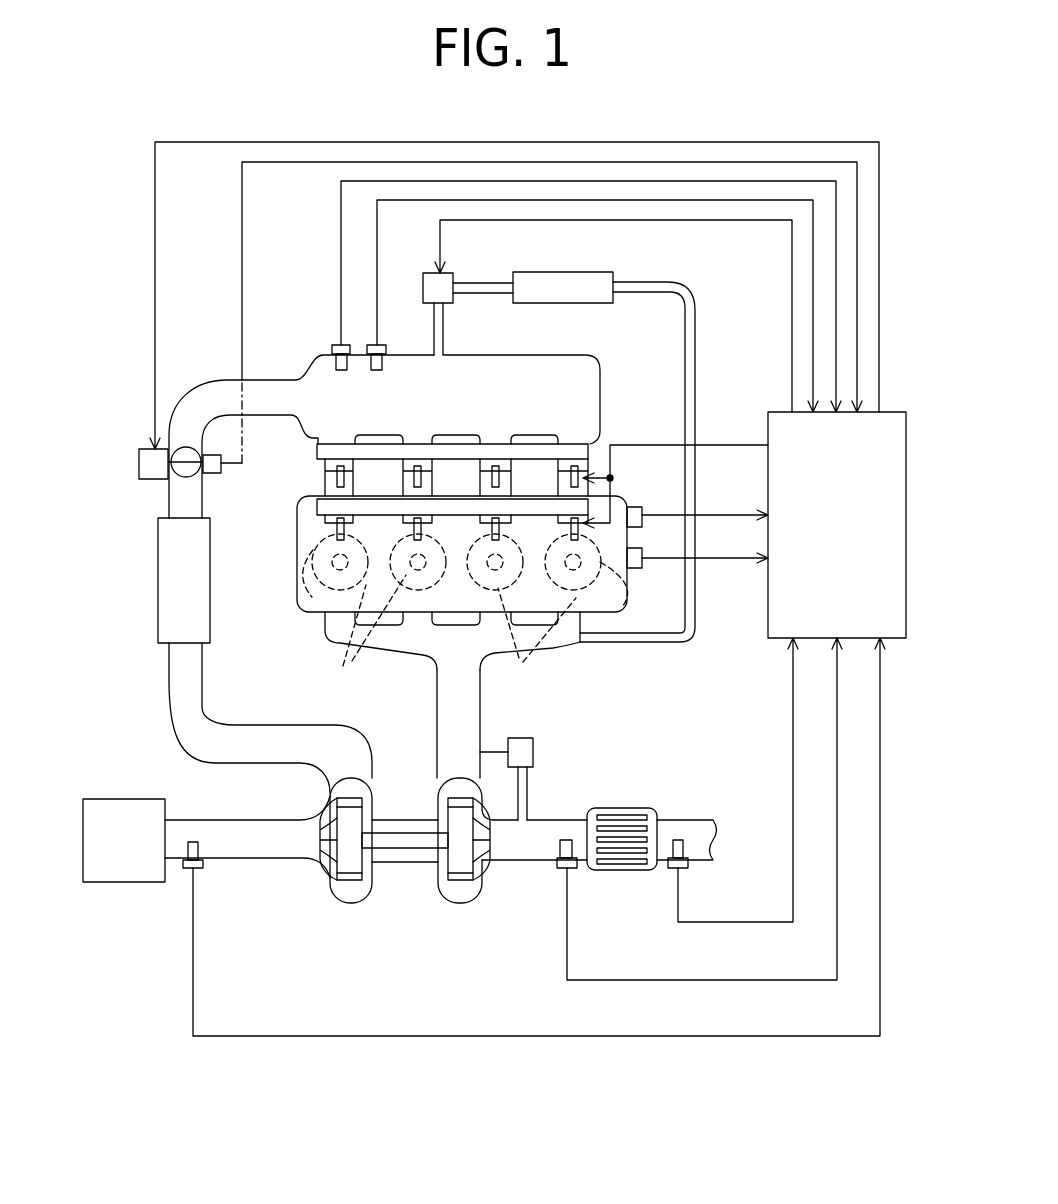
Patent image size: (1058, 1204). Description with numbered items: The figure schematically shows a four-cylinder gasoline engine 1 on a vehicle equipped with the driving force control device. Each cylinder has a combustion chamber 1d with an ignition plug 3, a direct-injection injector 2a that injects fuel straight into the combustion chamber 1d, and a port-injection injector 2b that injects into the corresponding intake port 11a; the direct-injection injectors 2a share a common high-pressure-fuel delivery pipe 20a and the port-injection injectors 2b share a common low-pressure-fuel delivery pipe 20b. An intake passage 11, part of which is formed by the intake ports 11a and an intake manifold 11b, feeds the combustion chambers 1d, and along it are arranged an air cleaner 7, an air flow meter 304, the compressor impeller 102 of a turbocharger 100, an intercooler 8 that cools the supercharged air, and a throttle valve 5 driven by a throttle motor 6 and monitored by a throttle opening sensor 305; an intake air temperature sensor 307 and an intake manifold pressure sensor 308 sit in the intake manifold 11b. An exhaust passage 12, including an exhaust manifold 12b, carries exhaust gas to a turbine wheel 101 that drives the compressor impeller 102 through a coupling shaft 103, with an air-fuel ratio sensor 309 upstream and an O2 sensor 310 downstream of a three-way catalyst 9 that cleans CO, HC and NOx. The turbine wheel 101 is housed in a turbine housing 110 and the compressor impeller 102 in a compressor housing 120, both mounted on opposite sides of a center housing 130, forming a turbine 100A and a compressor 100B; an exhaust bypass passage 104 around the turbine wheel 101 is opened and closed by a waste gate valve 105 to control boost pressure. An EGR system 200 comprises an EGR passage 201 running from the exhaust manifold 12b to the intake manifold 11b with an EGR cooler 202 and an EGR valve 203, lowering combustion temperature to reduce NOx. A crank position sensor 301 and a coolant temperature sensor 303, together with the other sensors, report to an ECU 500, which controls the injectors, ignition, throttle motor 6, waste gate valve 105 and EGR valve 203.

The engine 1 is at (645, 670).
The combustion chamber 1d is at (450, 636).
The direct-injection injector 2a is at (333, 540).
The port-injection injector 2b is at (340, 464).
The ignition plug 3 is at (300, 592).
The throttle valve 5 is at (183, 478).
The throttle motor 6 is at (139, 465).
The air cleaner 7 is at (98, 868).
The intercooler 8 is at (160, 585).
The three-way catalyst 9 is at (625, 808).
The intake passage 11 is at (150, 702).
The intake port 11a is at (322, 470).
The intake manifold 11b is at (589, 342).
The exhaust passage 12 is at (498, 720).
The exhaust manifold 12b is at (579, 658).
The high-pressure-fuel delivery pipe 20a is at (317, 503).
The low-pressure-fuel delivery pipe 20b is at (451, 448).
The turbocharger 100 is at (403, 902).
The turbine 100A is at (440, 913).
The compressor 100B is at (346, 911).
The turbine wheel 101 is at (455, 868).
The compressor impeller 102 is at (313, 863).
The coupling shaft 103 is at (402, 838).
The exhaust bypass passage 104 is at (528, 793).
The waste gate valve 105 is at (534, 752).
The turbine housing 110 is at (473, 900).
The compressor housing 120 is at (338, 903).
The center housing 130 is at (387, 863).
The EGR system 200 is at (710, 309).
The EGR passage 201 is at (697, 348).
The EGR cooler 202 is at (607, 272).
The EGR valve 203 is at (452, 274).
The crank position sensor 301 is at (628, 508).
The coolant temperature sensor 303 is at (644, 562).
The air flow meter 304 is at (185, 870).
The throttle opening sensor 305 is at (213, 473).
The intake air temperature sensor 307 is at (332, 347).
The intake manifold pressure sensor 308 is at (387, 352).
The air-fuel ratio sensor 309 is at (577, 866).
The O2 sensor 310 is at (688, 865).
The ECU 500 is at (766, 636).